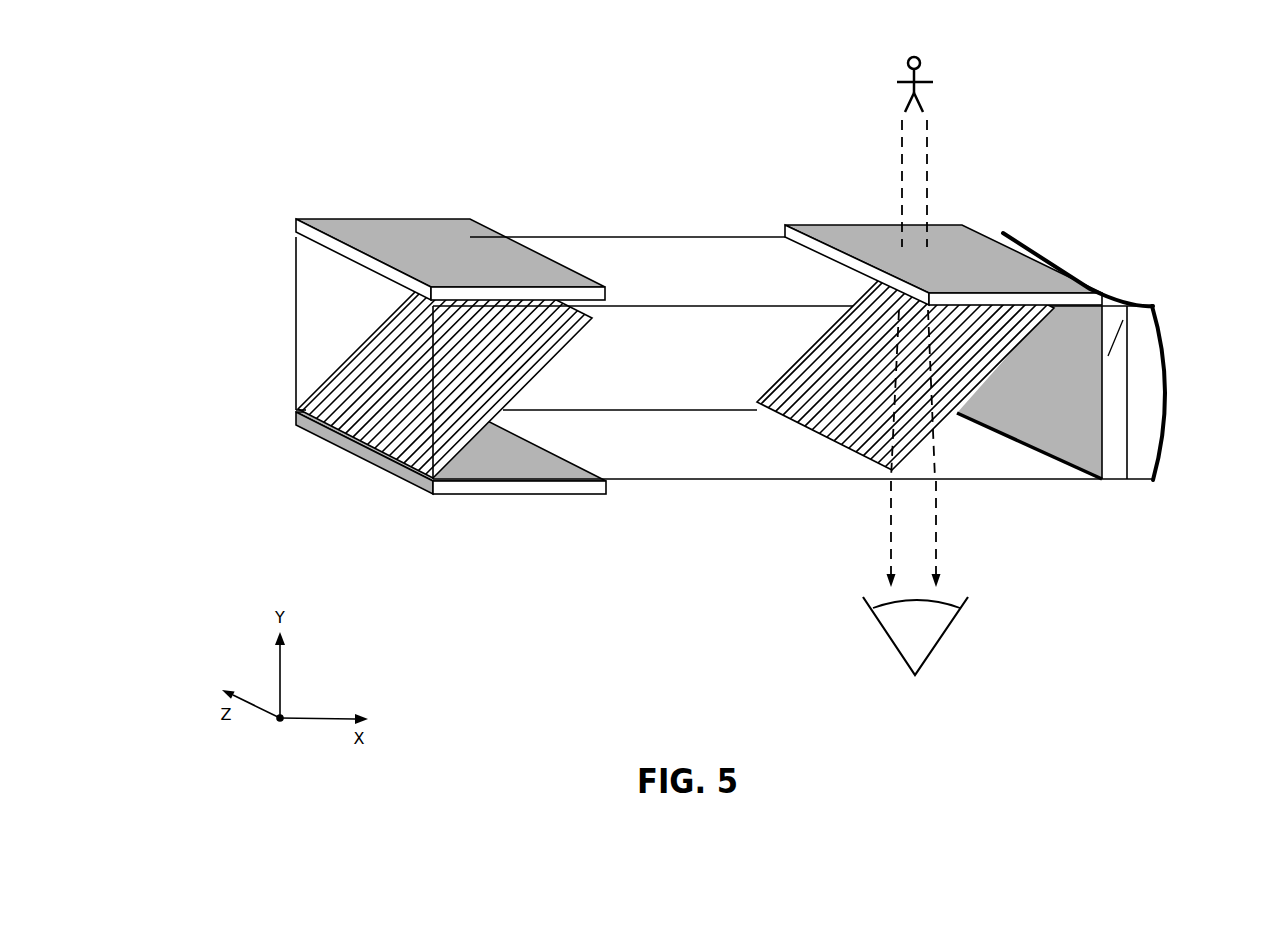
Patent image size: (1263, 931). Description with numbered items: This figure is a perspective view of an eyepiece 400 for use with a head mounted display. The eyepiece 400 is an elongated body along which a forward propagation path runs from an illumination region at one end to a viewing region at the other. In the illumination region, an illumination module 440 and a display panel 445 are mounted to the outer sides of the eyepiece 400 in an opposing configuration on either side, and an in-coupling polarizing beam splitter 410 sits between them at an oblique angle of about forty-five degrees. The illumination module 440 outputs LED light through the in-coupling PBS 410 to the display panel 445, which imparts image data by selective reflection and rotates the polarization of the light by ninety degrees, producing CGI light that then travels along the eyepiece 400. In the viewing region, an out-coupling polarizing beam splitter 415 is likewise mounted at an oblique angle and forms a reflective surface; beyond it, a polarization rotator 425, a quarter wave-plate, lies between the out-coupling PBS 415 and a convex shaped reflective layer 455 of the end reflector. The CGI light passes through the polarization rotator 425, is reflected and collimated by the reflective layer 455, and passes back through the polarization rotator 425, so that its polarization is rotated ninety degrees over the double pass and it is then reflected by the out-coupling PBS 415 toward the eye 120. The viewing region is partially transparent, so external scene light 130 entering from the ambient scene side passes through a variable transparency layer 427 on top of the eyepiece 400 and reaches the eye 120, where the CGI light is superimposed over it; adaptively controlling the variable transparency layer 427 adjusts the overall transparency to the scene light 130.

The eyepiece 400 is at (268, 76).
The external scene light 130 is at (928, 143).
The illumination module 440 is at (455, 263).
The variable transparency layer 427 is at (1000, 277).
The in-coupling polarizing beam splitter 410 is at (414, 386).
The out-coupling polarizing beam splitter 415 is at (845, 400).
The convex shaped reflective layer 455 is at (1167, 365).
The display panel 445 is at (458, 494).
The polarization rotator 425 is at (1108, 481).
The eye 120 is at (931, 636).